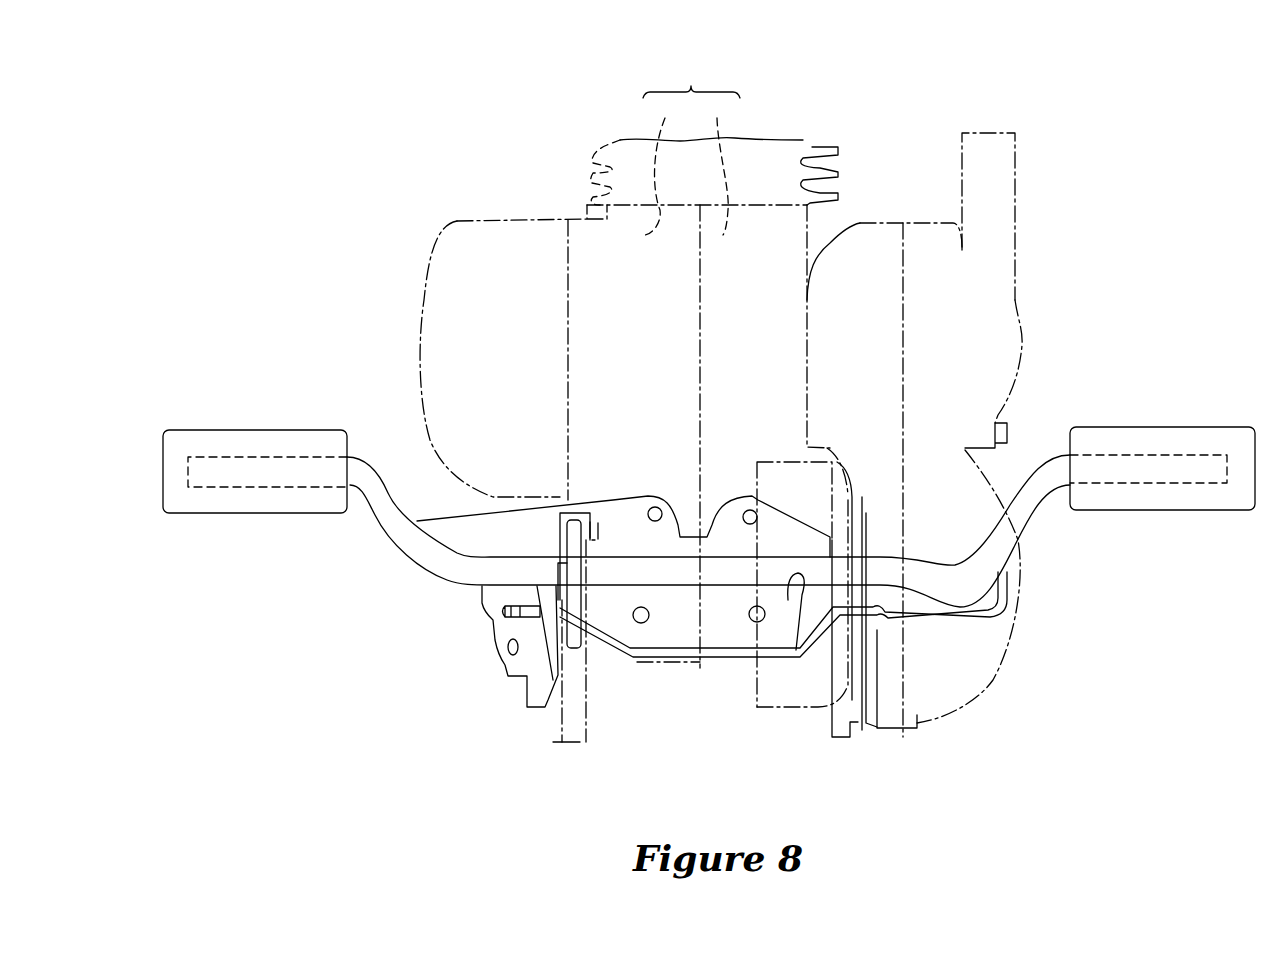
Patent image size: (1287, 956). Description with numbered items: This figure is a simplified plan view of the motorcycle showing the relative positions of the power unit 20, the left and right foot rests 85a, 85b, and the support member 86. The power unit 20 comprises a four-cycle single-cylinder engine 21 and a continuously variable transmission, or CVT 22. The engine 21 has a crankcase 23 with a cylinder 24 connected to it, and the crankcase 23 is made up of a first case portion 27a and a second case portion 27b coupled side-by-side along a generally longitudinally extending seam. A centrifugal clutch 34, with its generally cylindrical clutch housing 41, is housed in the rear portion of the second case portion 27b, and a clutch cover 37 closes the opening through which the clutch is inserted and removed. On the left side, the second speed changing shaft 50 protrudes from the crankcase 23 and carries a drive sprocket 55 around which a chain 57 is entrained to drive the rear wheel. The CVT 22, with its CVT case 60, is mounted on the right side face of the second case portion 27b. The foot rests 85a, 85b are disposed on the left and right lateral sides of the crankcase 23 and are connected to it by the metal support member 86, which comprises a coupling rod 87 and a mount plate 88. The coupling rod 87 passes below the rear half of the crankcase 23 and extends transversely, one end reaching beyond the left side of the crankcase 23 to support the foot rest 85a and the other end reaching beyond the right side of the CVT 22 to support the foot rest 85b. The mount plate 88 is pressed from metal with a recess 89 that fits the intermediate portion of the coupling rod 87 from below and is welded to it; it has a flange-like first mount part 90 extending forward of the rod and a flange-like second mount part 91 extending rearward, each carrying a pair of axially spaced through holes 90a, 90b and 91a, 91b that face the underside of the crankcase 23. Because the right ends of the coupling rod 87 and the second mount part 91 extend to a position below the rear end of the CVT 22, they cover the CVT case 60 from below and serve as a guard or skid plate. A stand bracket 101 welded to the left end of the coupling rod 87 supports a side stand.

The power unit 20 is at (930, 113).
The engine 21 is at (813, 146).
The continuously variable transmission 22 is at (1018, 628).
The crankcase 23 is at (691, 81).
The cylinder 24 is at (595, 180).
The first case portion 27a is at (664, 166).
The second case portion 27b is at (721, 166).
The centrifugal clutch 34 is at (817, 490).
The clutch cover 37 is at (847, 500).
The clutch housing 41 is at (767, 708).
The second speed changing shaft 50 is at (562, 577).
The drive sprocket 55 is at (568, 545).
The chain 57 is at (578, 745).
The CVT case 60 is at (1022, 337).
The left foot rest 85a is at (218, 438).
The right foot rest 85b is at (1140, 427).
The support member 86 is at (880, 553).
The coupling rod 87 is at (617, 570).
The mount plate 88 is at (667, 643).
The recess 89 is at (793, 626).
The first mount part 90 is at (780, 520).
The through hole 90a is at (655, 507).
The through hole 90b is at (747, 510).
The second mount part 91 is at (710, 655).
The through hole 91a is at (640, 624).
The through hole 91b is at (757, 698).
The stand bracket 101 is at (505, 668).